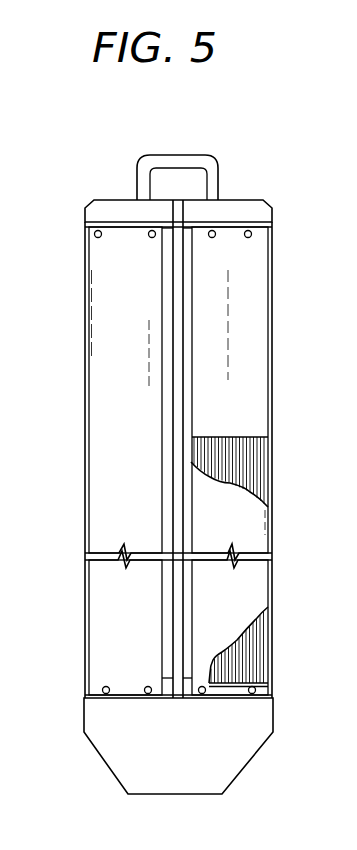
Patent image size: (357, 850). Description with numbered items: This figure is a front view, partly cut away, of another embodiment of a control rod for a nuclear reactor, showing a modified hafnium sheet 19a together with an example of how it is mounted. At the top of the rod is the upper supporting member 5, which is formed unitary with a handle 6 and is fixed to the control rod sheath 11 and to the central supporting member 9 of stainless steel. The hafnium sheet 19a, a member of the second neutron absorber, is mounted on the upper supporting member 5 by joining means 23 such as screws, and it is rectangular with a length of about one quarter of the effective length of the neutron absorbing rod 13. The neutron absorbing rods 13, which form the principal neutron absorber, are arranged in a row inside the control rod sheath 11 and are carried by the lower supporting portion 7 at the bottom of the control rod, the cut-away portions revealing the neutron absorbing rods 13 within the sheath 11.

The upper supporting member 5 is at (262, 206).
The handle 6 is at (203, 162).
The lower supporting portion 7 is at (260, 719).
The central supporting member 9 is at (168, 410).
The control rod sheath 11 is at (92, 338).
The neutron absorbing rod 13 is at (258, 450).
The hafnium sheet 19a is at (268, 305).
The joining means 23 is at (252, 234).